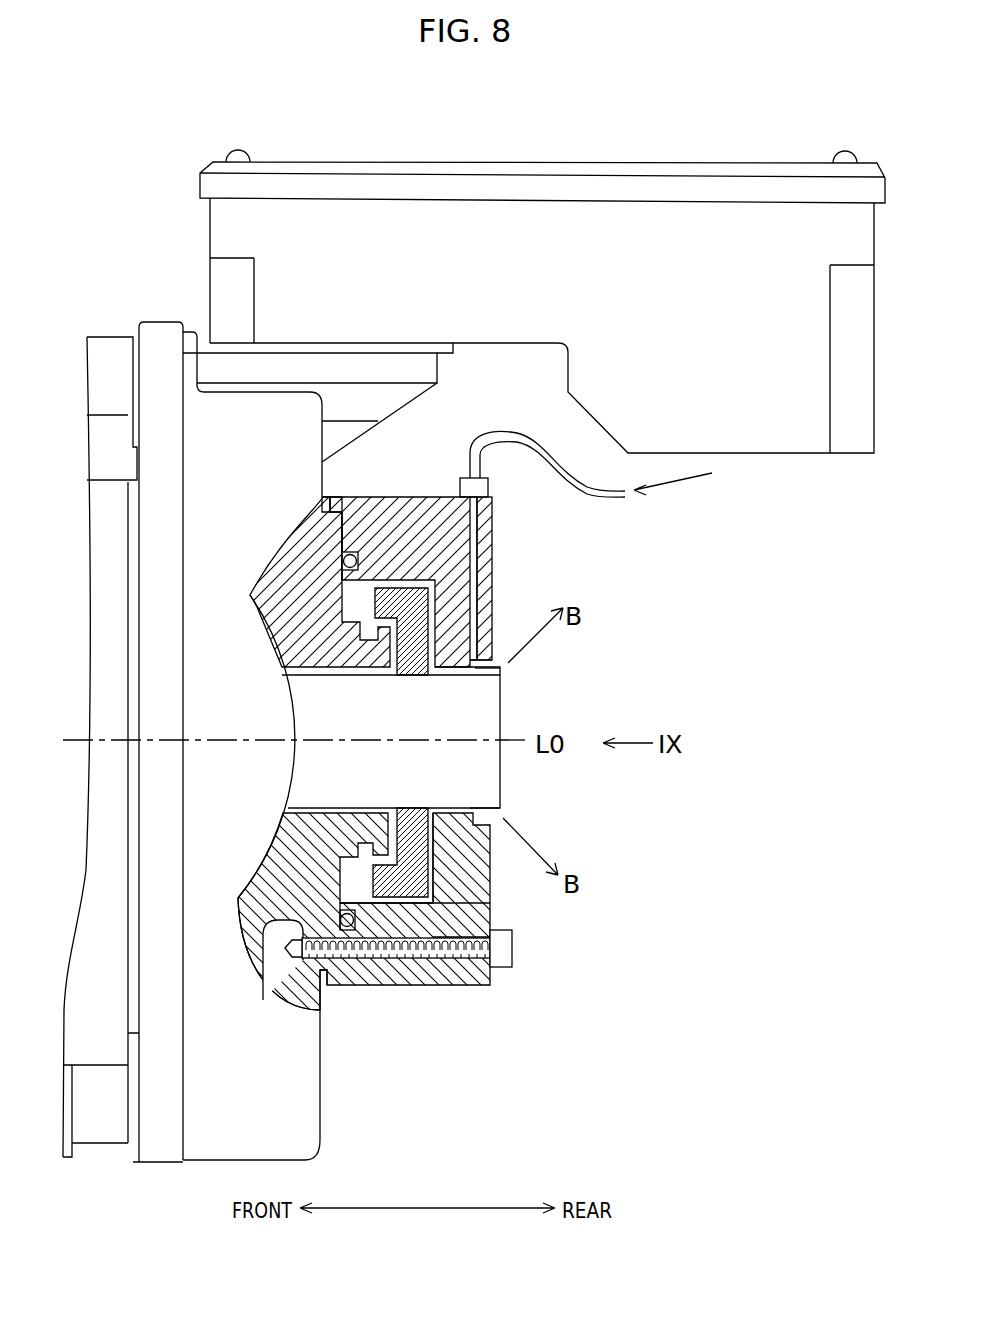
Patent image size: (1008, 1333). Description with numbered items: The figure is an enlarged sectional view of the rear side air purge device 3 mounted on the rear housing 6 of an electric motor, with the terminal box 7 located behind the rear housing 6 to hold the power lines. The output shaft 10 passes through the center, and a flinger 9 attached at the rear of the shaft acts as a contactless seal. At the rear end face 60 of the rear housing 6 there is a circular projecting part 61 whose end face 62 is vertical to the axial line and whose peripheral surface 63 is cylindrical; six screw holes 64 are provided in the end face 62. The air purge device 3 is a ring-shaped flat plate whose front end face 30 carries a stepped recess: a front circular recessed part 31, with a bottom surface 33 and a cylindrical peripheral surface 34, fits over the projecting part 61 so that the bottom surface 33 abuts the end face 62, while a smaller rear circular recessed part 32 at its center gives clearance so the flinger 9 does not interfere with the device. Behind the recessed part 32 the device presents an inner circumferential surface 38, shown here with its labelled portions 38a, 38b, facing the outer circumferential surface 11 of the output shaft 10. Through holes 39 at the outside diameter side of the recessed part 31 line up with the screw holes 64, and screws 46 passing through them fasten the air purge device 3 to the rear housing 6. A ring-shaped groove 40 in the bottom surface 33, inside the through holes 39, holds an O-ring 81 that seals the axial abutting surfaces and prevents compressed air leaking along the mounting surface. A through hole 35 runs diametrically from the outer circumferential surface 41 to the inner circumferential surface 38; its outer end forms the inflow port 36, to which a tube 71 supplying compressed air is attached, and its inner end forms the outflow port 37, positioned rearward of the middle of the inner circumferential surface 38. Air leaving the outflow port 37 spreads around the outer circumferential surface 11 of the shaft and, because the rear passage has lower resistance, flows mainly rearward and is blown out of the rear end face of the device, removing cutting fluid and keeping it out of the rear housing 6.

The air purge device 3 is at (463, 985).
The rear housing 6 is at (323, 990).
The terminal box 7 is at (592, 163).
The flinger 9 is at (433, 850).
The output shaft 10 is at (487, 773).
The outer circumferential surface 11 is at (470, 812).
The front end face 30 is at (322, 503).
The circular recessed part 31 is at (342, 543).
The circular recessed part 32 is at (435, 903).
The bottom surface 33 is at (342, 576).
The peripheral surface 34 is at (338, 517).
The through hole 35 is at (473, 588).
The inflow port 36 is at (473, 515).
The outflow port 37 is at (473, 660).
The inner circumferential surface 38 is at (607, 640).
The shaft first portion 38a is at (490, 675).
The shaft second portion 38b is at (453, 668).
The through holes 39 is at (452, 937).
The ring-shaped groove 40 is at (357, 565).
The outer circumferential surface 41 is at (437, 497).
The screws 46 is at (512, 955).
The rear end face 60 is at (323, 1127).
The circular projecting part 61 is at (483, 533).
The end face 62 is at (345, 533).
The peripheral surface 63 is at (338, 510).
The screw holes 64 is at (307, 992).
The tube 71 is at (607, 497).
The O-ring 81 is at (367, 935).